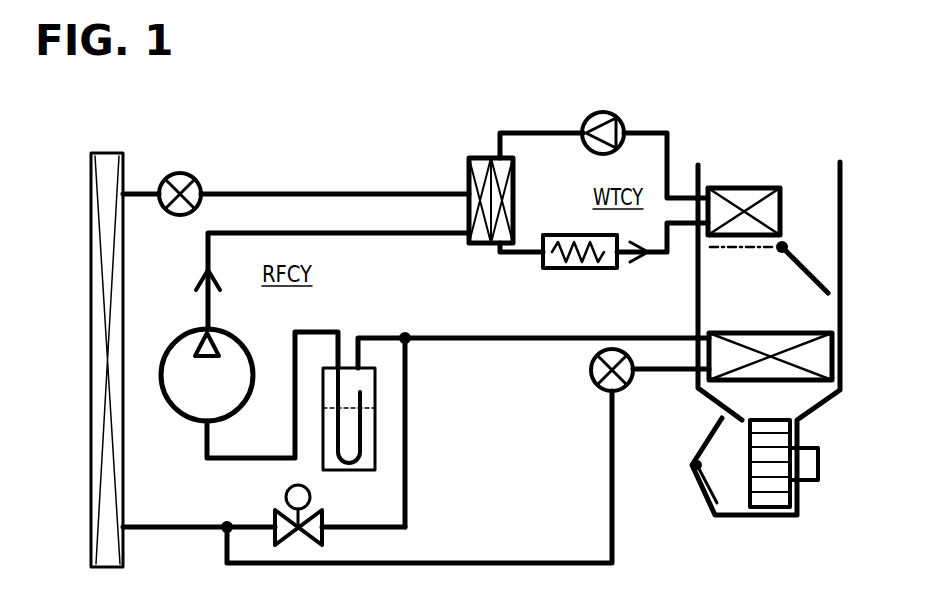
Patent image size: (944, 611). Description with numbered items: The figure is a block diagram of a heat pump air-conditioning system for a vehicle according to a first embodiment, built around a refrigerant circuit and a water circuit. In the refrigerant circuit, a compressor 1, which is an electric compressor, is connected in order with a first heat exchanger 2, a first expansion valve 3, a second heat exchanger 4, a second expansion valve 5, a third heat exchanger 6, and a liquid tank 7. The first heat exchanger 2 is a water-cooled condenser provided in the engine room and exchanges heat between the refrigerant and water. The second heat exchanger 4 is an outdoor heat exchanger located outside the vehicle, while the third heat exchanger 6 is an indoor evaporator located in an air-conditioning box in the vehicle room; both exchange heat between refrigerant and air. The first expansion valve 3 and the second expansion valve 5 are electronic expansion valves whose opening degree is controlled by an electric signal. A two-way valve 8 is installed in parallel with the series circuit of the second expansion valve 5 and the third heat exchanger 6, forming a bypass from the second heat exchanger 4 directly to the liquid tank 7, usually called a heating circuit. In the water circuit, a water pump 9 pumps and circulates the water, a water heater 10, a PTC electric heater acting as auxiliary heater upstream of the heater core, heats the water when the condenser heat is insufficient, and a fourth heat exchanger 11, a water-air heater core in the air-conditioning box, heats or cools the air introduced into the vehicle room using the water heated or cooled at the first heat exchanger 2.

The compressor 1 is at (179, 338).
The first heat exchanger 2 is at (515, 178).
The first expansion valve 3 is at (178, 172).
The second heat exchanger 4 is at (103, 152).
The second expansion valve 5 is at (589, 372).
The third heat exchanger 6 is at (735, 332).
The liquid tank 7 is at (350, 363).
The two-way valve 8 is at (320, 540).
The water pump 9 is at (588, 118).
The water heater 10 is at (556, 268).
The fourth heat exchanger 11 is at (782, 222).